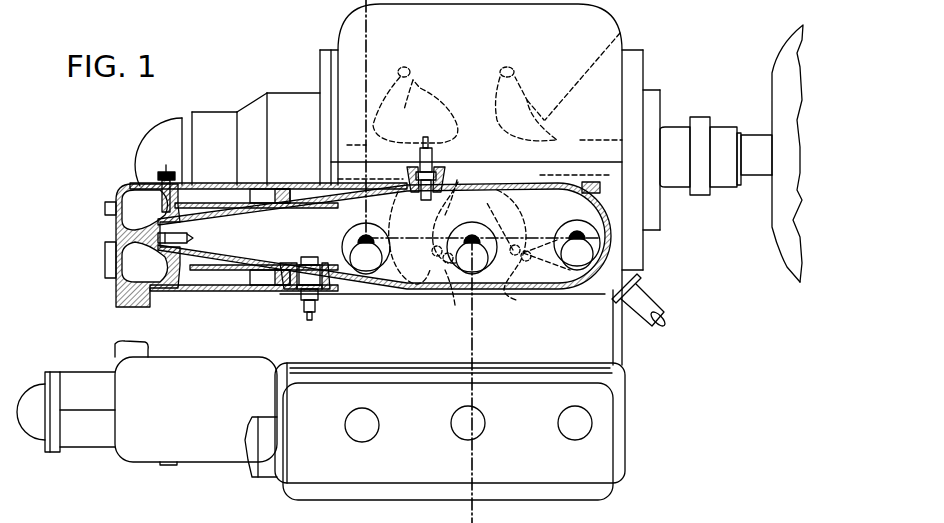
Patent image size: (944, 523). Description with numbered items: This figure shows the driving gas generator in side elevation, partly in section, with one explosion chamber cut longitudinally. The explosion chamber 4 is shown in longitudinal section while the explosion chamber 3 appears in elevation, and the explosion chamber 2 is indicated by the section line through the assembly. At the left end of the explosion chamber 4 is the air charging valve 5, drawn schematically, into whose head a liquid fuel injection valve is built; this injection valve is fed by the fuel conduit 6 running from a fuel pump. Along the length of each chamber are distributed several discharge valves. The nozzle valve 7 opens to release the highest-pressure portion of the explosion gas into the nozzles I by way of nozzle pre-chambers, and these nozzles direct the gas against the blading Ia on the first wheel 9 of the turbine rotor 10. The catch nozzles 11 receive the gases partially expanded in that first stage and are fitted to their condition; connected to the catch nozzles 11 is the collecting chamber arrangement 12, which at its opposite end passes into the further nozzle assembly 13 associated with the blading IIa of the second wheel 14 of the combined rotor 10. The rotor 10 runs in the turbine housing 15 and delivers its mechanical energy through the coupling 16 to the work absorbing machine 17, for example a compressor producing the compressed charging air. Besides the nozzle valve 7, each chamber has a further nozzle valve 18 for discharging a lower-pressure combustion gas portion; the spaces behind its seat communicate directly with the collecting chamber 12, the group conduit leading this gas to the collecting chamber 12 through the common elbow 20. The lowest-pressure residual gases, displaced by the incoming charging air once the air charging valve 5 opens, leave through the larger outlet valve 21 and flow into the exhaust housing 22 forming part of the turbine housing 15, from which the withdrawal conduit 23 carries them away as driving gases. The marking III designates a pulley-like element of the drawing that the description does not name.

The explosion chamber 2 is at (365, 3).
The explosion chamber 3 is at (200, 448).
The explosion chamber 4 is at (563, 293).
The air charging valve 5 is at (188, 240).
The fuel conduit 6 is at (104, 242).
The nozzle valve 7 is at (365, 266).
The first wheel 9 is at (414, 90).
The turbine rotor 10 is at (580, 140).
The catch nozzles 11 is at (408, 296).
The collecting chamber arrangement 12 is at (455, 305).
The further nozzle assembly 13 is at (516, 300).
The second wheel 14 is at (544, 120).
The turbine housing 15 is at (339, 49).
The coupling 16 is at (692, 128).
The work absorbing machine 17 is at (792, 262).
The further nozzle valve 18 is at (478, 262).
The common elbow 20 is at (457, 180).
The outlet valve 21 is at (577, 270).
The exhaust housing 22 is at (620, 33).
The withdrawal conduit 23 is at (660, 305).
The nozzles I is at (392, 290).
The blading Ia is at (400, 68).
The blading IIa is at (500, 68).
The pulley III is at (343, 240).